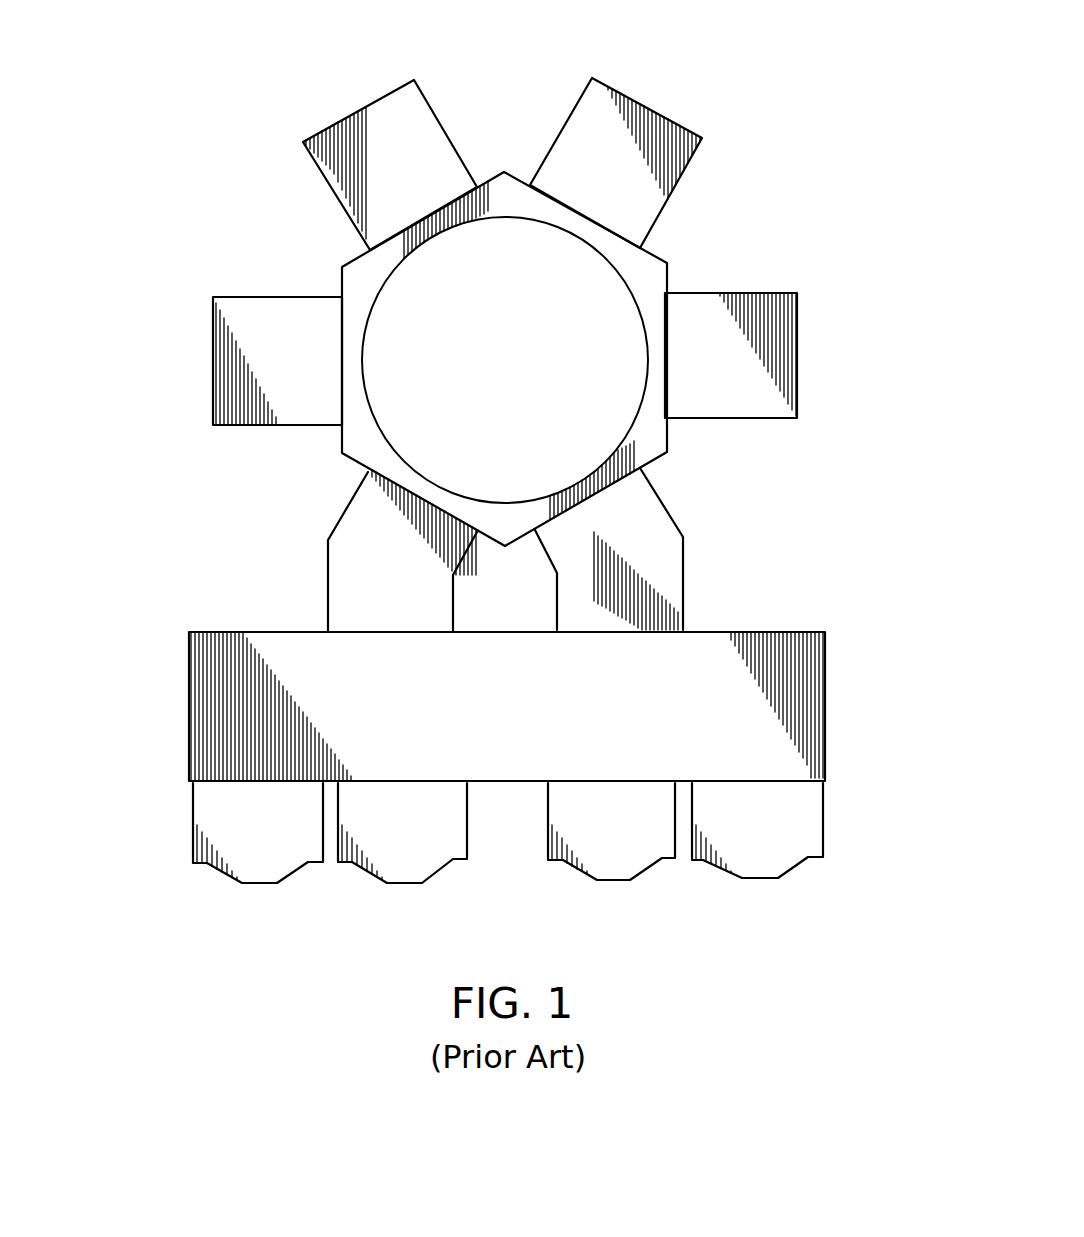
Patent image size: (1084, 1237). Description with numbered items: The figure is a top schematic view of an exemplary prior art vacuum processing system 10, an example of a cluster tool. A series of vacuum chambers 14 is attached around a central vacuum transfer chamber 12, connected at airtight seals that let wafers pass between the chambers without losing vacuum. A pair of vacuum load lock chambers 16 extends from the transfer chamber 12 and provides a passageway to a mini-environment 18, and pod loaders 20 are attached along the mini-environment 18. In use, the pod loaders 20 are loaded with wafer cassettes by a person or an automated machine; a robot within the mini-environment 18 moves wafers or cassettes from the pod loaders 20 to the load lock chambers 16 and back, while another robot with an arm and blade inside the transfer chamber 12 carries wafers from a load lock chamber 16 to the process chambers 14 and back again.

The vacuum processing system 10 is at (509, 490).
The central vacuum transfer chamber 12 is at (667, 263).
The vacuum chambers 14 is at (355, 112).
The vacuum load lock chambers 16 is at (328, 540).
The mini-environment 18 is at (777, 628).
The pod loaders 20 is at (508, 869).